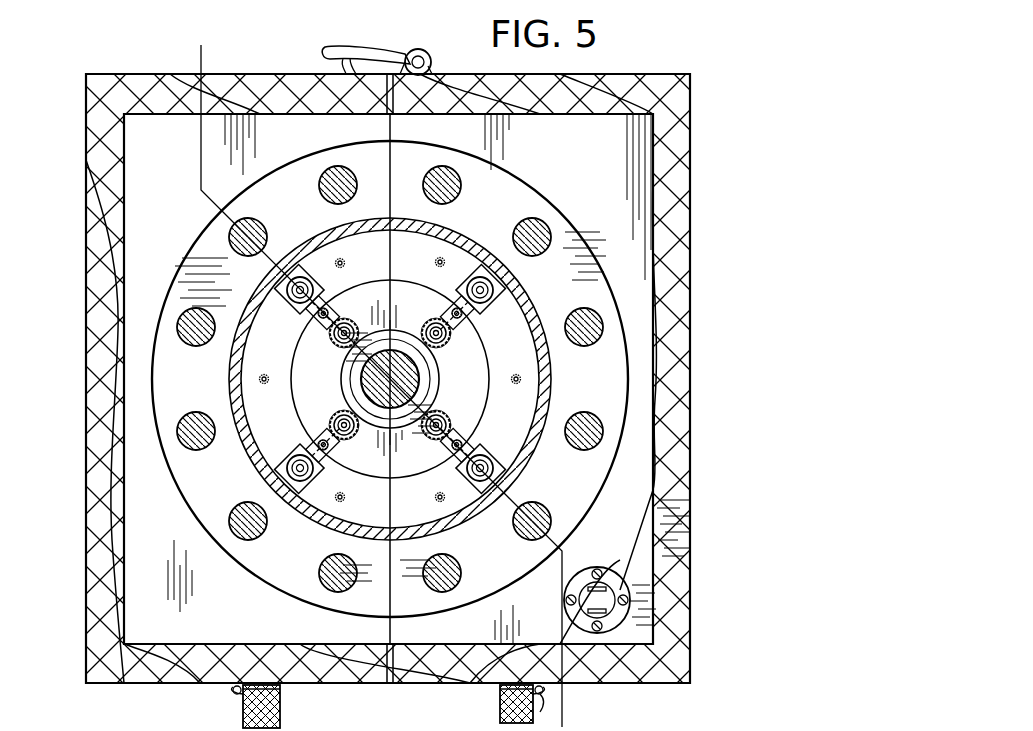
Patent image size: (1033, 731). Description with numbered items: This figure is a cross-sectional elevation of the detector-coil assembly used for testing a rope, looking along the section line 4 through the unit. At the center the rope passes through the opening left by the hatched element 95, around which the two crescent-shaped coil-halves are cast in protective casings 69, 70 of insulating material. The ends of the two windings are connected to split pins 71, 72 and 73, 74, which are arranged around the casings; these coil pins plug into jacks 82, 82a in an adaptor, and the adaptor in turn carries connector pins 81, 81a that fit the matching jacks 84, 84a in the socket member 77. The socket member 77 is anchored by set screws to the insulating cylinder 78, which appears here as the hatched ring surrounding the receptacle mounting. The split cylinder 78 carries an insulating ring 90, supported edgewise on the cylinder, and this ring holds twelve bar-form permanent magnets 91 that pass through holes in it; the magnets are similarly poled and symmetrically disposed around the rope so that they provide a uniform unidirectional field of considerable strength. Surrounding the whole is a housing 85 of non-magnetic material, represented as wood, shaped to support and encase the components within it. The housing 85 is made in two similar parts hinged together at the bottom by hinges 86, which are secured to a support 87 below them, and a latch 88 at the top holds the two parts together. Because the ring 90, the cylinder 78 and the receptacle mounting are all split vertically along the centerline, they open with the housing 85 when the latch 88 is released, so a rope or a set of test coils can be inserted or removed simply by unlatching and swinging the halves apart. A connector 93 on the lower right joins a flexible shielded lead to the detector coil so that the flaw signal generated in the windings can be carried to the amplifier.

The section line 4- 4 is at (204, 48).
The protective casing 69 is at (352, 374).
The protective casing 70 is at (432, 368).
The split pin 71 is at (347, 321).
The split pin 72 is at (349, 437).
The split pin 73 is at (431, 437).
The split pin 74 is at (433, 321).
The socket member 77 is at (531, 408).
The insulating cylinder 78 is at (228, 377).
The connector pin 81 is at (303, 281).
The connector pin 81a is at (298, 456).
The jack 82 is at (330, 335).
The jack 82a is at (335, 415).
The jack 84 is at (319, 308).
The jack 84a is at (312, 476).
The housing 85 is at (82, 160).
The hinge 86 is at (235, 690).
The support 87 is at (282, 700).
The latch 88 is at (372, 50).
The ring 90 is at (543, 195).
The permanent magnet 91 is at (240, 506).
The connector 93 is at (601, 588).
The central shaft 95 is at (412, 382).